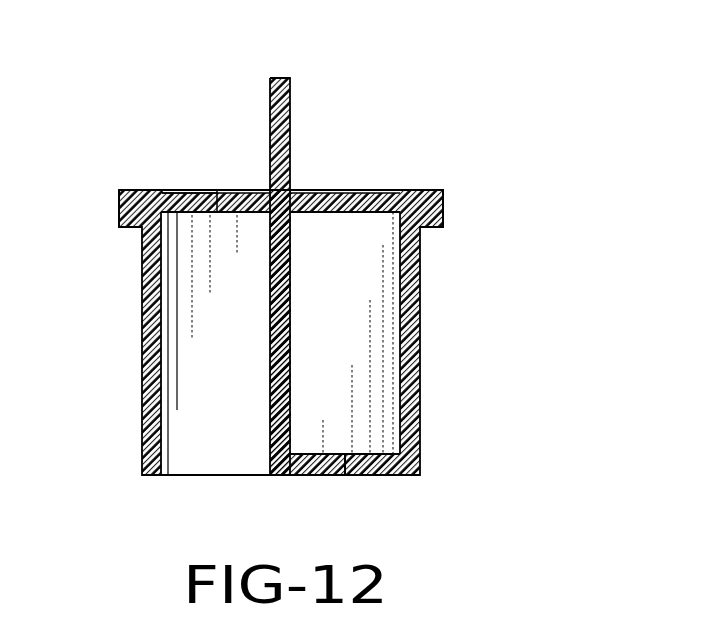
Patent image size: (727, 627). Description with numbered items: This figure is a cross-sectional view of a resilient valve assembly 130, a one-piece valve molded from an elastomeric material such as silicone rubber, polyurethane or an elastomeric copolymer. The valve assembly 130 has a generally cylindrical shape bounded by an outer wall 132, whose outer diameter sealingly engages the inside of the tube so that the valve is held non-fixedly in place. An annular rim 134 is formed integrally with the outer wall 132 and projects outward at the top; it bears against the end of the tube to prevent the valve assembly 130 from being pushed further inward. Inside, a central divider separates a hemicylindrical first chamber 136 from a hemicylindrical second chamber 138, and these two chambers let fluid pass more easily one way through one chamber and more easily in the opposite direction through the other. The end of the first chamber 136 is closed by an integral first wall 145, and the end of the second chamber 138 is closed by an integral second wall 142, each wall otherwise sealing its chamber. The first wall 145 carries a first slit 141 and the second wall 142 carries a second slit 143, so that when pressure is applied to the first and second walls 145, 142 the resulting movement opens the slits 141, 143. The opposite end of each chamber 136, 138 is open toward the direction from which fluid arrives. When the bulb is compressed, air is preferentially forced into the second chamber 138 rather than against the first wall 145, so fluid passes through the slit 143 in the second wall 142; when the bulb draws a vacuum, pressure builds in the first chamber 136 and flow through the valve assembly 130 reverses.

The valve assembly 130 is at (514, 139).
The outer wall 132 is at (420, 390).
The annular rim 134 is at (443, 217).
The first chamber 136 is at (253, 380).
The second chamber 138 is at (368, 283).
The first slit 141 is at (210, 193).
The second wall 142 is at (320, 476).
The second slit 143 is at (355, 476).
The first wall 145 is at (185, 192).